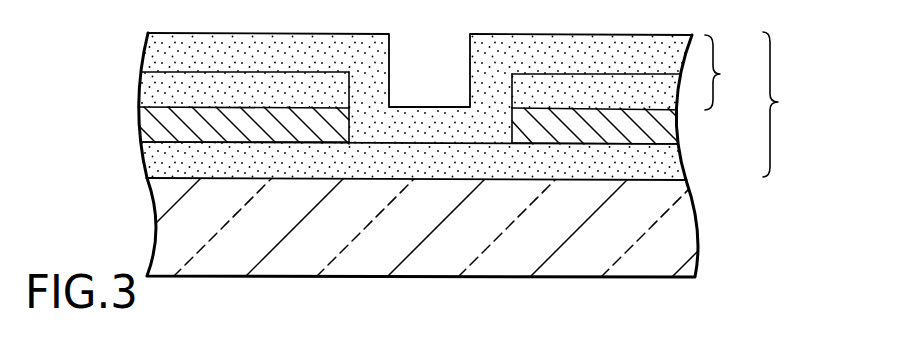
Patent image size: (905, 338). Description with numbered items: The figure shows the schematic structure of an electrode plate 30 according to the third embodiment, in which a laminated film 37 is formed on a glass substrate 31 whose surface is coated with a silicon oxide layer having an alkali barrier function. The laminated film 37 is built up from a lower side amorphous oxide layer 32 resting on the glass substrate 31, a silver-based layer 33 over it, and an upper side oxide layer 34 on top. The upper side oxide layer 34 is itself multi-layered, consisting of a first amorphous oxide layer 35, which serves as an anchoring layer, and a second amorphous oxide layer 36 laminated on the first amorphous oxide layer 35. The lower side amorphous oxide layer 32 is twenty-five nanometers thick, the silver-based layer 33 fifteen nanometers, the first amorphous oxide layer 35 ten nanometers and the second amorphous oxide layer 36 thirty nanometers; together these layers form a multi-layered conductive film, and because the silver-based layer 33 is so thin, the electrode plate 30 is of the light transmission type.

The electrode plate 30 is at (786, 225).
The glass substrate 31 is at (682, 240).
The lower side amorphous oxide layer 32 is at (152, 157).
The silver-based layer 33 is at (145, 127).
The upper side oxide layer 34 is at (731, 72).
The first amorphous oxide layer 35 is at (147, 88).
The second amorphous oxide layer 36 is at (151, 53).
The laminated film 37 is at (479, 106).